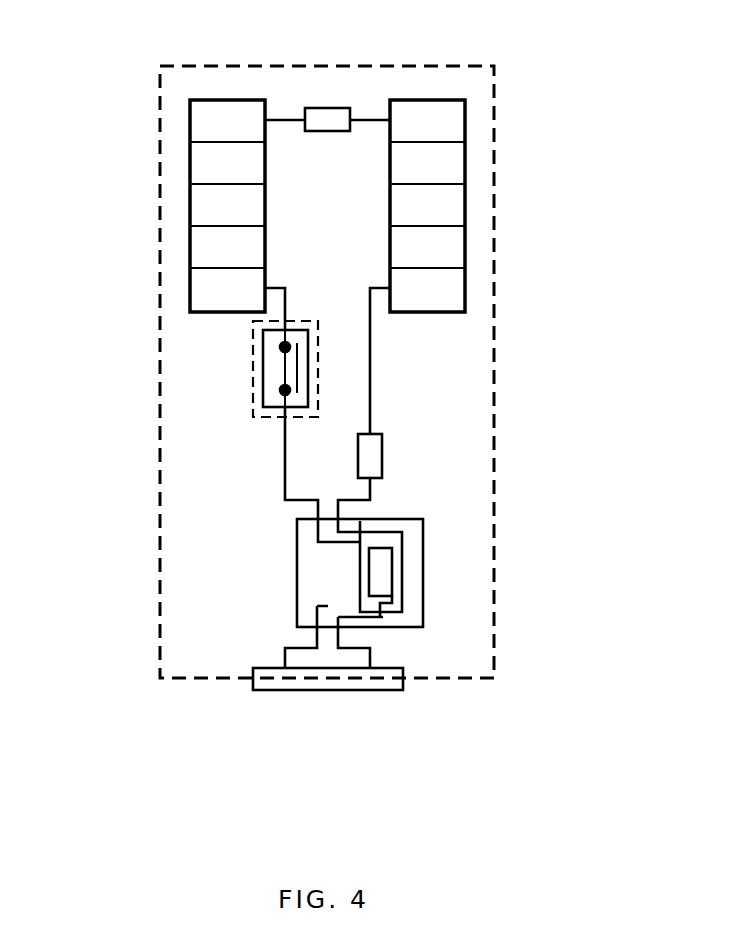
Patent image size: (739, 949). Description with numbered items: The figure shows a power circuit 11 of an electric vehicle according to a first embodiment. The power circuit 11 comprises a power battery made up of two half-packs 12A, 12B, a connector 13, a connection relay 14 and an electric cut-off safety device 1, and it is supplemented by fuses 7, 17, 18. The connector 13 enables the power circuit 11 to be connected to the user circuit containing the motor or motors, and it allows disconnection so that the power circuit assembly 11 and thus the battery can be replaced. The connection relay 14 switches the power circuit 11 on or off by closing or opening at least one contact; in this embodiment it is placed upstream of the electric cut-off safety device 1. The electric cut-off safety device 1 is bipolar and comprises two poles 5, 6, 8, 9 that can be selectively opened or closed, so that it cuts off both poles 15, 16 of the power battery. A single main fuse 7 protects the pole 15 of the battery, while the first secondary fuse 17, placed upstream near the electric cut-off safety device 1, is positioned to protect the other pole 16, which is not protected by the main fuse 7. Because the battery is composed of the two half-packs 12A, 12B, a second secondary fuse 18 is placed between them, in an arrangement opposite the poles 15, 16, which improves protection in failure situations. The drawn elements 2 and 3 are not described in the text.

The electric cut-off safety device 1 is at (262, 528).
The lead terminals 2 is at (297, 610).
The housing 3 is at (423, 591).
The pole of the electric cut-off safety device 5 is at (377, 540).
The pole of the electric cut-off safety device 6 is at (383, 617).
The main fuse 7 is at (392, 562).
The pole of the electric cut-off safety device 8 is at (318, 542).
The pole of the electric cut-off safety device 9 is at (348, 615).
The power circuit 11 is at (497, 602).
The half-pack 12A is at (190, 204).
The half-pack 12B is at (463, 205).
The connector 13 is at (300, 692).
The connection relay 14 is at (253, 372).
The pole of the power battery 15 is at (268, 287).
The pole of the power battery 16 is at (384, 288).
The first secondary fuse 17 is at (382, 455).
The second secondary fuse 18 is at (333, 108).